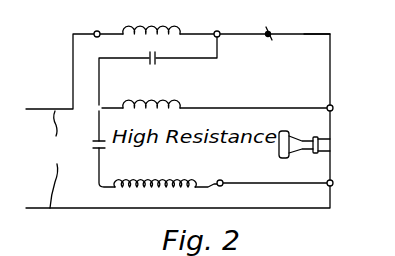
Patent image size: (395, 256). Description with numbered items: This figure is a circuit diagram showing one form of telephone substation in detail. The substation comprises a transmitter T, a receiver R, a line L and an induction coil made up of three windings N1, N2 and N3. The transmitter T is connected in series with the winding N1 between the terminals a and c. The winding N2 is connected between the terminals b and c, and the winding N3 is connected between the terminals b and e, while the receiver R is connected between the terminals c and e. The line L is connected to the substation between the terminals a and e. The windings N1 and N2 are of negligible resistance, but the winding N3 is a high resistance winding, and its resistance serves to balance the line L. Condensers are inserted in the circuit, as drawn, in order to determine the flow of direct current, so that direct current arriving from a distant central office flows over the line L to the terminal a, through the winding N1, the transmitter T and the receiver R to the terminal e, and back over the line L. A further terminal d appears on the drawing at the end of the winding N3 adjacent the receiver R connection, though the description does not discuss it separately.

The terminal a is at (95, 23).
The terminal b is at (217, 23).
The terminal c is at (337, 106).
The terminal d is at (224, 193).
The terminal e is at (337, 180).
The transmitter T is at (279, 23).
The winding N1 is at (152, 19).
The winding N2 is at (152, 95).
The winding N3 is at (155, 172).
The receiver R is at (304, 153).
The line L is at (50, 159).